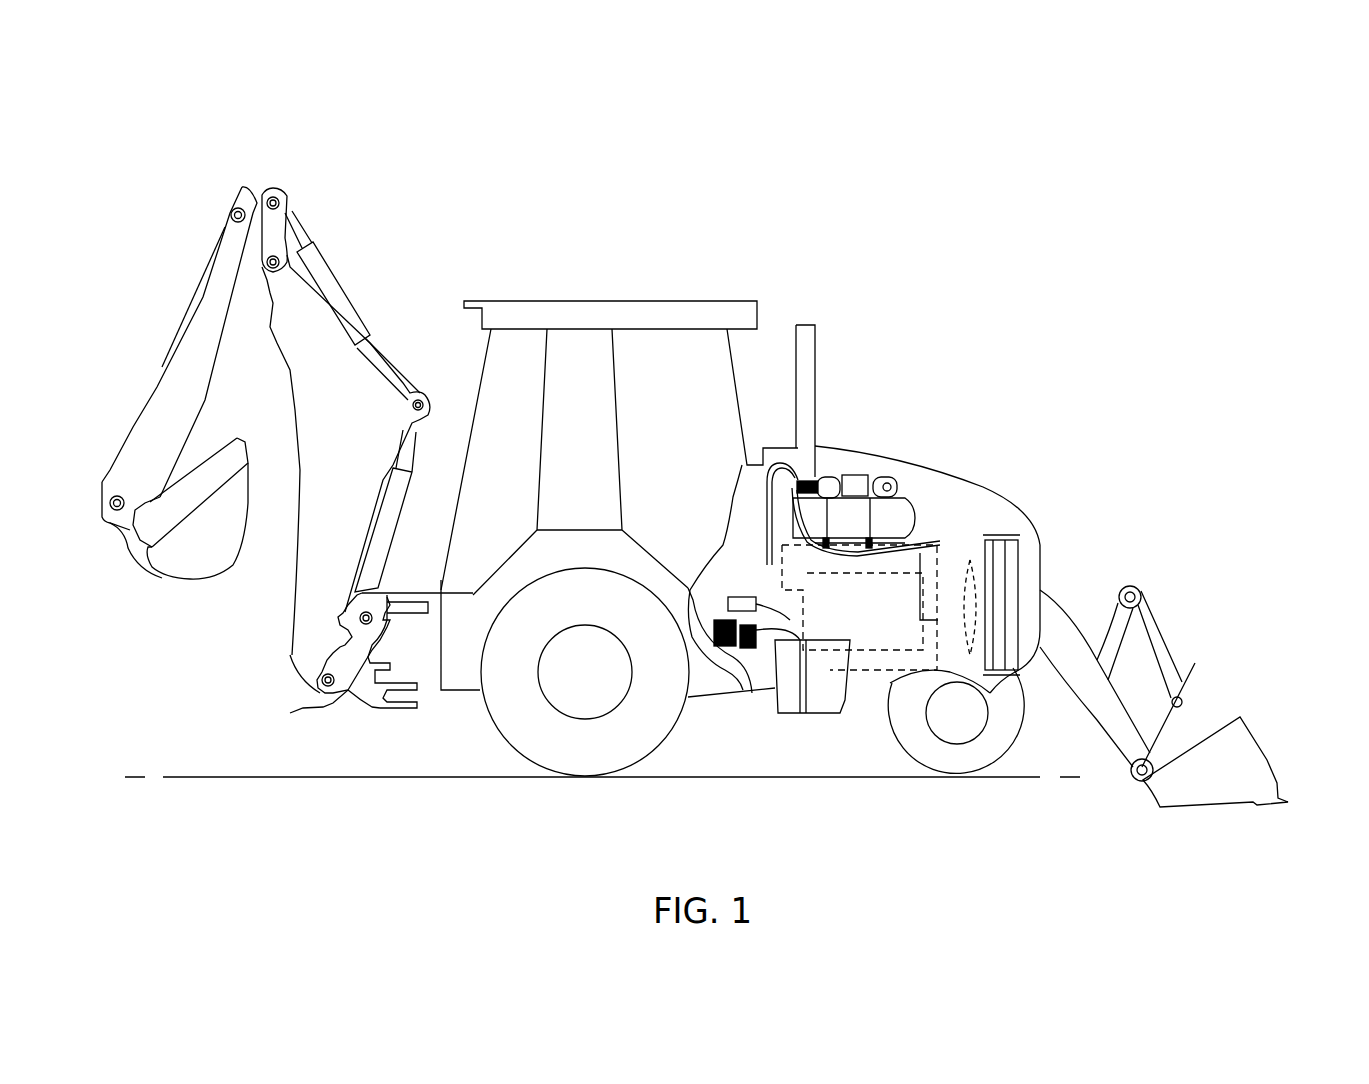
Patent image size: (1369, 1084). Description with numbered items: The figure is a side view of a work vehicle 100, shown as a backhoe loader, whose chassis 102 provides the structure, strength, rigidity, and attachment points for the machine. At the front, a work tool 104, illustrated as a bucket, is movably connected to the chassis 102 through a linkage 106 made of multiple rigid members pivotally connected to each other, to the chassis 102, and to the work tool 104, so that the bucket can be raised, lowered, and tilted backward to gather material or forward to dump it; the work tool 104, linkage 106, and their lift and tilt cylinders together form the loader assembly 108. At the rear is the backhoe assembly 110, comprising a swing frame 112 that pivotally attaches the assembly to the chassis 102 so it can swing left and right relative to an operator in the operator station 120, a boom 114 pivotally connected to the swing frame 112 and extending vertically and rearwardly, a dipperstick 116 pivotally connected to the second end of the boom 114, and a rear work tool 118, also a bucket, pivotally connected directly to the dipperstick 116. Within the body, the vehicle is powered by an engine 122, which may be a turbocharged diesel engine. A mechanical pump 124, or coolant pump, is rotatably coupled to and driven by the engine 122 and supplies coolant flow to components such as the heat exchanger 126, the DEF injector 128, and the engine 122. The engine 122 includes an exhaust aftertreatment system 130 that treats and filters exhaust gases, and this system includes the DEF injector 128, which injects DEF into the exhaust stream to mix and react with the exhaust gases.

The work vehicle 100 is at (974, 207).
The chassis 102 is at (1012, 462).
The work tool 104 is at (1197, 723).
The linkage 106 is at (1143, 580).
The loader assembly 108 is at (1057, 789).
The backhoe assembly 110 is at (227, 789).
The swing frame 112 is at (290, 713).
The boom 114 is at (328, 383).
The dipperstick 116 is at (180, 400).
The work tool 118 is at (205, 542).
The operator station 120 is at (708, 216).
The engine 122 is at (882, 613).
The mechanical pump 124 is at (890, 687).
The heat exchanger 126 is at (997, 617).
The DEF injector 128 is at (833, 450).
The exhaust aftertreatment system 130 is at (882, 464).